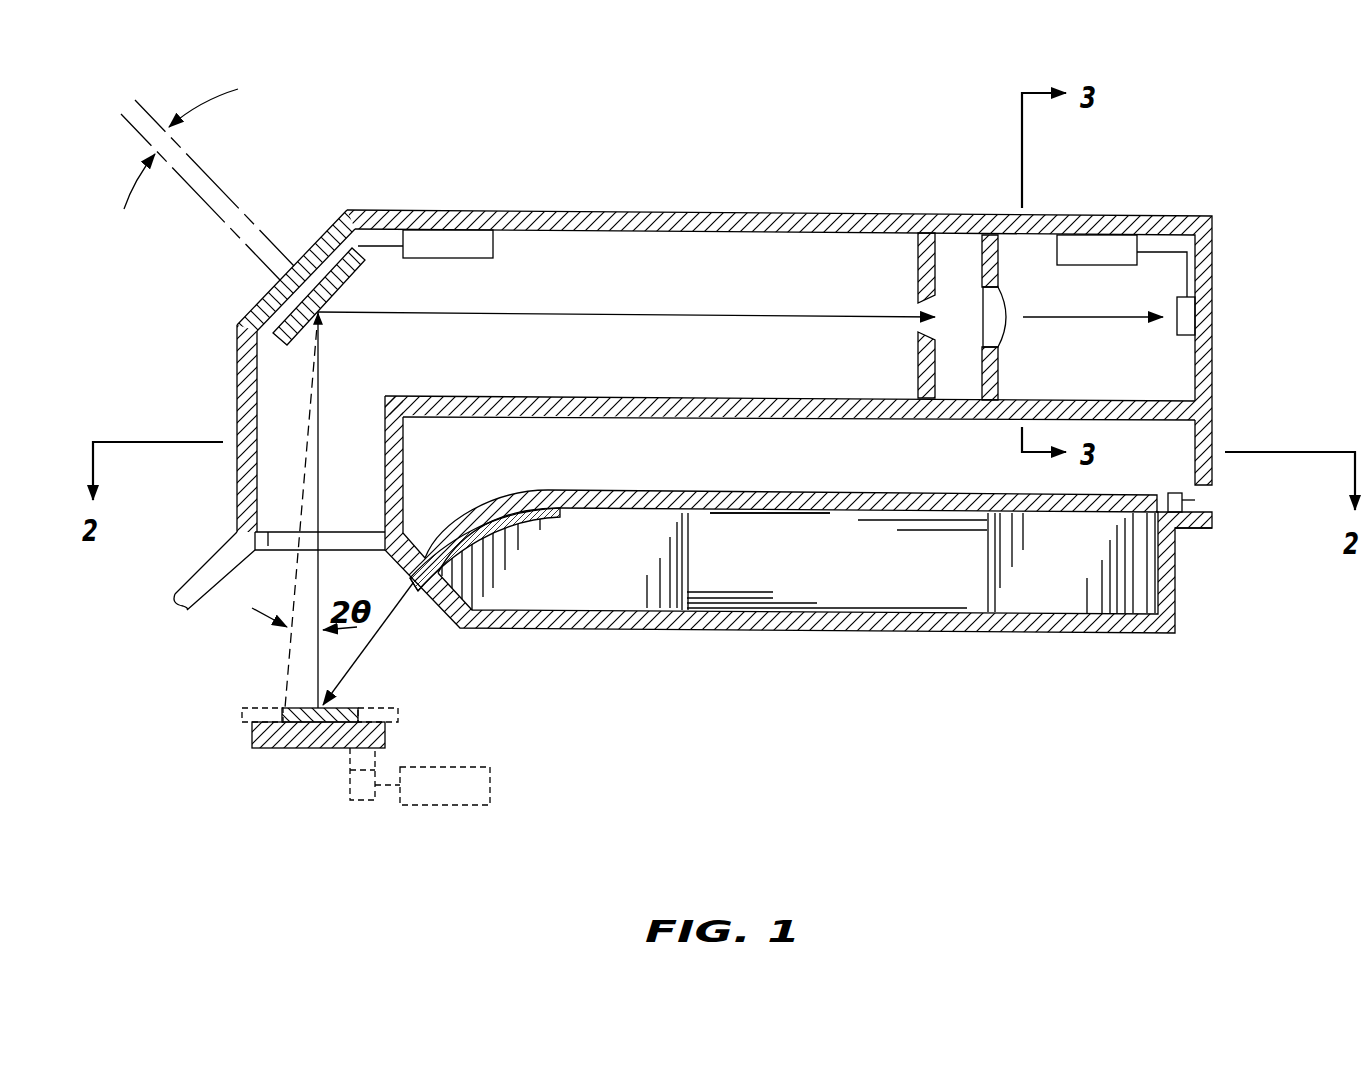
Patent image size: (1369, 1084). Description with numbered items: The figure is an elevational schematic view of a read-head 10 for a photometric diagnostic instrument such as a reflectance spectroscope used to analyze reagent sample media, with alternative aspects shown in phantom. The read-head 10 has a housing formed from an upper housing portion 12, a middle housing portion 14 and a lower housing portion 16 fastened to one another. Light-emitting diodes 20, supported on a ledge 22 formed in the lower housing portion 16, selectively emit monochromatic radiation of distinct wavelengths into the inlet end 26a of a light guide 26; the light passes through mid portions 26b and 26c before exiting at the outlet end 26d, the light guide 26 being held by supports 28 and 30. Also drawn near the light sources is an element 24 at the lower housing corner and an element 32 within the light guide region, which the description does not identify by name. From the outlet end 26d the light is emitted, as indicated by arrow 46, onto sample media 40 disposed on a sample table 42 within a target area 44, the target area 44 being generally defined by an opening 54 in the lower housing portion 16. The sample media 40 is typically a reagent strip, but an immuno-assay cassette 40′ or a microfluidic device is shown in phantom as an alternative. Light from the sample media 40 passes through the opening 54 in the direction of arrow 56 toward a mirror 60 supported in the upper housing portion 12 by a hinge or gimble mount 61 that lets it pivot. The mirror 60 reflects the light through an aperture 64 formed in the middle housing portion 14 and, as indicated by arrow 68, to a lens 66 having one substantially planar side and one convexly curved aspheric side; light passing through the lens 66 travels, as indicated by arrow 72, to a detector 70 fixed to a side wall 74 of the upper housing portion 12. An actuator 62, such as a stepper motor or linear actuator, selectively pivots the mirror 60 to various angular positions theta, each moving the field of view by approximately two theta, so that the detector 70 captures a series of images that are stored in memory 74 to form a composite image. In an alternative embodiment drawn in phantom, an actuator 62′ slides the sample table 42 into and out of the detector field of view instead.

The read-head 10 is at (292, 193).
The upper housing portion 12 is at (598, 200).
The middle housing portion 14 is at (670, 390).
The lower housing portion 16 is at (237, 488).
The light-emitting diodes 20 is at (1173, 490).
The ledge 22 is at (1197, 528).
The mounting gap 24 is at (1187, 498).
The light guide 26 is at (783, 515).
The inlet end 26a is at (1148, 515).
The mid portion 26b is at (832, 512).
The mid portion 26c is at (507, 517).
The outlet end 26d is at (420, 597).
The support 28 is at (1050, 597).
The support 30 is at (628, 592).
The bottom mirror 32 is at (898, 593).
The sample media 40 is at (293, 722).
The immuno-assay cassette 40′ is at (242, 718).
The sample table 42 is at (335, 737).
The target area 44 is at (260, 683).
The arrow 46 is at (363, 647).
The opening 54 is at (268, 537).
The arrow 56 is at (330, 380).
The mirror 60 is at (347, 270).
The hinge or gimble mount 61 is at (295, 298).
The actuator 62 is at (418, 235).
The actuator 62′ is at (482, 785).
The aperture 64 is at (927, 296).
The lens 66 is at (1000, 302).
The arrow 68 is at (822, 317).
The detector 70 is at (1187, 307).
The arrow 72 is at (1090, 322).
The side wall 74 is at (1083, 240).